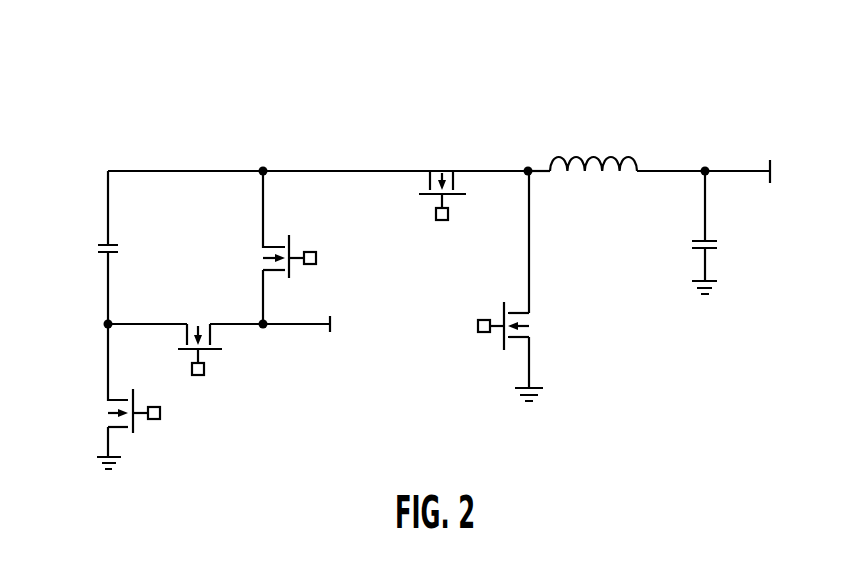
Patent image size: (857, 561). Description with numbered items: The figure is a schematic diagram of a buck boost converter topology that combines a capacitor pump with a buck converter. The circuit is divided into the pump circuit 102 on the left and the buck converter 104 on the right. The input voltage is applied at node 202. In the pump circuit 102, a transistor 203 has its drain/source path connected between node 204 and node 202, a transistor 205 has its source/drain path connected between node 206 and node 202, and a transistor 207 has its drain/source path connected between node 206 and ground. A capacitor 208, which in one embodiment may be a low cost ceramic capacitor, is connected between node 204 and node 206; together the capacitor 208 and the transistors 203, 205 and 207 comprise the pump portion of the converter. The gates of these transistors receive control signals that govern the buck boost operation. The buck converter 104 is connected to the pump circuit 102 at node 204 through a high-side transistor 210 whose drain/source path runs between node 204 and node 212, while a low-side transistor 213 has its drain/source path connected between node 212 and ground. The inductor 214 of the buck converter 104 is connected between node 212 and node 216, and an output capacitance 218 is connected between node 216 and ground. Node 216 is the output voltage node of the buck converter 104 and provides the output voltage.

The pump circuit 102 is at (184, 105).
The buck converter 104 is at (614, 82).
The node 202 is at (265, 328).
The transistor 203 is at (303, 269).
The node 204 is at (263, 168).
The transistor 205 is at (215, 352).
The node 206 is at (105, 323).
The transistor 207 is at (148, 423).
The capacitor 208 is at (106, 243).
The high-side transistor 210 is at (432, 197).
The node 212 is at (525, 176).
The low-side transistor 213 is at (504, 345).
The inductor 214 is at (610, 155).
The node 216 is at (706, 167).
The output capacitance 218 is at (692, 245).